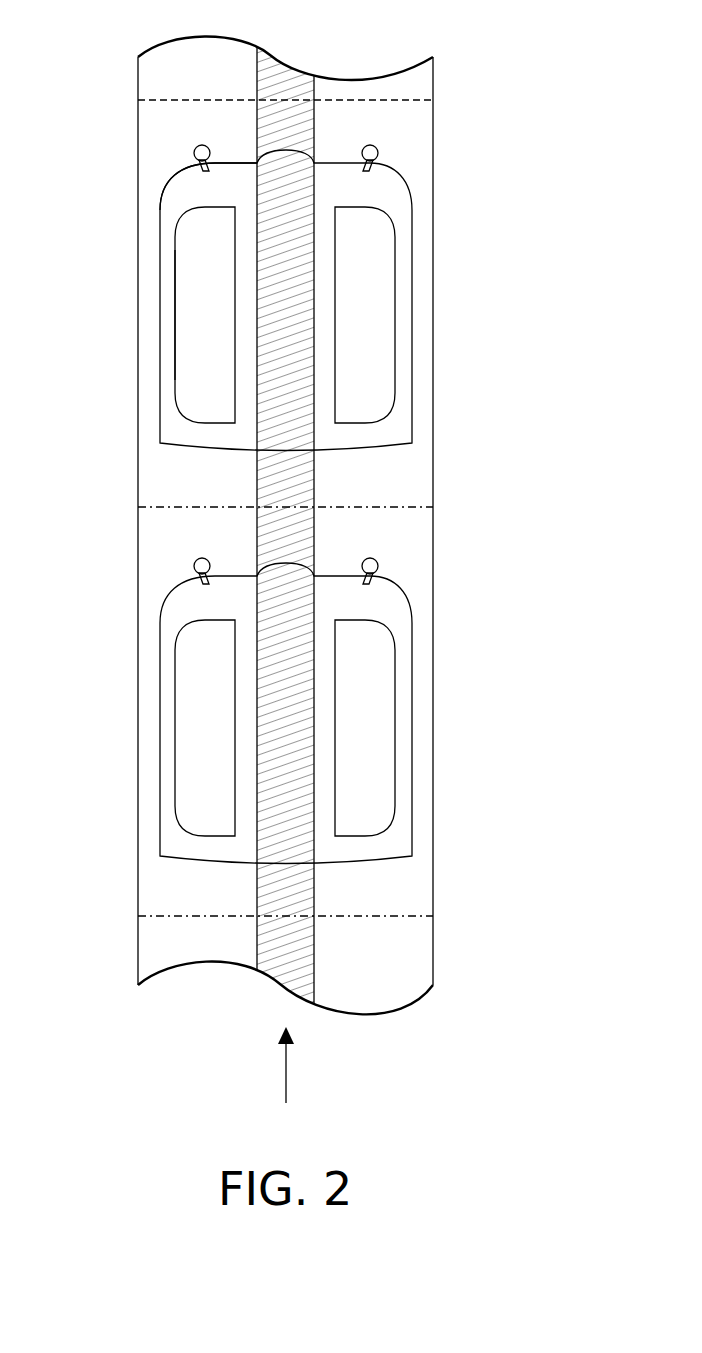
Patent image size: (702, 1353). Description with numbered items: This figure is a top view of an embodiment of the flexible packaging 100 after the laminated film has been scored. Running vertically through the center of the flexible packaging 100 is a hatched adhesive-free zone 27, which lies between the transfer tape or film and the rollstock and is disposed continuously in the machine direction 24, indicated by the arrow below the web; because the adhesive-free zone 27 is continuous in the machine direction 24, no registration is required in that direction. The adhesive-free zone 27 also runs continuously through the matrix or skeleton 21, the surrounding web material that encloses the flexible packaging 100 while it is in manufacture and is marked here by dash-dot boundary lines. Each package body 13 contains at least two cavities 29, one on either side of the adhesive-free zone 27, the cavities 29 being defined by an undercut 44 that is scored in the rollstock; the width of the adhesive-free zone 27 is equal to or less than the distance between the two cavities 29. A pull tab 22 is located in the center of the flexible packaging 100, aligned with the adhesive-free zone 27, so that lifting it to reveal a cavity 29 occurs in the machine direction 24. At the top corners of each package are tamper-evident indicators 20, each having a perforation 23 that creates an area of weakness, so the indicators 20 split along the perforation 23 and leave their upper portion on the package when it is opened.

The flexible packaging 100 is at (418, 172).
The absorbent core body 13 is at (283, 349).
The tamper-evident indicators 20 is at (200, 145).
The matrix or skeleton 21 is at (160, 486).
The pull tab 22 is at (287, 157).
The perforation 23 is at (193, 170).
The machine direction 24 is at (288, 1067).
The adhesive-free zone 27 is at (290, 437).
The cavities 29 is at (200, 272).
The undercut 44 is at (185, 368).